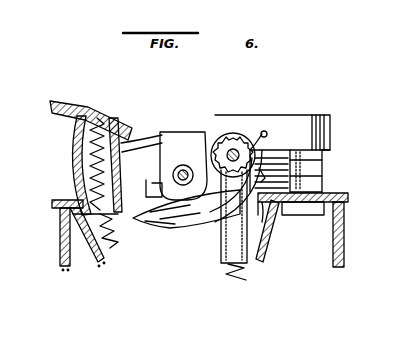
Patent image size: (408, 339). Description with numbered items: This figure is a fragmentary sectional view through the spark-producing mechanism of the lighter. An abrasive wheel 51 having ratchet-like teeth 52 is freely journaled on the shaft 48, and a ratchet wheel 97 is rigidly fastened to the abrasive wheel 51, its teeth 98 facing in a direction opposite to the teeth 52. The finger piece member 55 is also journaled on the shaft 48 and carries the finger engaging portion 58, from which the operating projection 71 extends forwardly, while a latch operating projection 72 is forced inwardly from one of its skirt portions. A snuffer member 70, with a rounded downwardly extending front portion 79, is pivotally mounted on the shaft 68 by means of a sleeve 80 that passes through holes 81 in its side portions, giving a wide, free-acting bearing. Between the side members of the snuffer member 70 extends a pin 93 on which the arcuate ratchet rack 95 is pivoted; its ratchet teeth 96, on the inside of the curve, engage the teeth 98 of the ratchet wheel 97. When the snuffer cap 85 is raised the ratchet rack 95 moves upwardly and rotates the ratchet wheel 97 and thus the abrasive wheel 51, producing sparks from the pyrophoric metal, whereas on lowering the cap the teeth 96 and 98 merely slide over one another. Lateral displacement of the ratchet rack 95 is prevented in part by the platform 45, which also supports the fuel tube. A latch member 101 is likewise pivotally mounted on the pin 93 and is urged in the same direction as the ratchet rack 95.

The platform 45 is at (266, 226).
The shaft 48 is at (279, 137).
The abrasive wheel 51 is at (224, 132).
The teeth 52 is at (236, 133).
The finger piece member 55 is at (64, 160).
The finger engaging portion 58 is at (100, 116).
The shaft 68 is at (184, 168).
The snuffer member 70 is at (318, 110).
The operating projection 71 is at (139, 136).
The latch operating projection 72 is at (146, 188).
The front portion 79 is at (318, 130).
The sleeve 80 is at (174, 172).
The holes 81 is at (190, 166).
The snuffer cap 85 is at (314, 160).
The pin 93 is at (268, 135).
The ratchet rack 95 is at (262, 250).
The ratchet teeth 96 is at (224, 232).
The ratchet wheel 97 is at (264, 134).
The teeth 98 is at (236, 150).
The latch member 101 is at (170, 228).